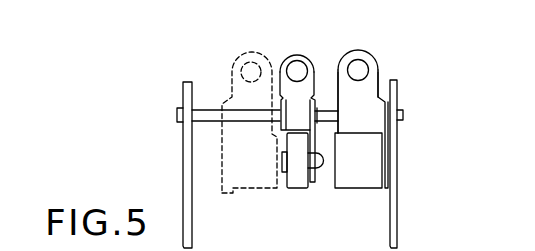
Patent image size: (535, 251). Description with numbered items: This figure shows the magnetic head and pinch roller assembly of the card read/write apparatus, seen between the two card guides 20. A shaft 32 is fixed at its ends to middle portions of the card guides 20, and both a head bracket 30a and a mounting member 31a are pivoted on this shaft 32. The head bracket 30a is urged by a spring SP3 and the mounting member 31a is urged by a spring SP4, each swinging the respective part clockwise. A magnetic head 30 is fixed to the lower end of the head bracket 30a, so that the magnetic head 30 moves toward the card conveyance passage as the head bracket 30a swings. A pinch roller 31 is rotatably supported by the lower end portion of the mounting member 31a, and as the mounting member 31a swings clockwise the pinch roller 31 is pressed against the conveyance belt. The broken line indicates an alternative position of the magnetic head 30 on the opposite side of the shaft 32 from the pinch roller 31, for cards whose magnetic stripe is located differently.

The card guide 20 is at (183, 171).
The magnetic head 30 is at (371, 176).
The head bracket 30a is at (374, 73).
The pinch roller 31 is at (293, 182).
The mounting member 31a is at (322, 109).
The shaft 32 is at (325, 108).
The spring SP3 is at (370, 71).
The spring SP4 is at (293, 57).